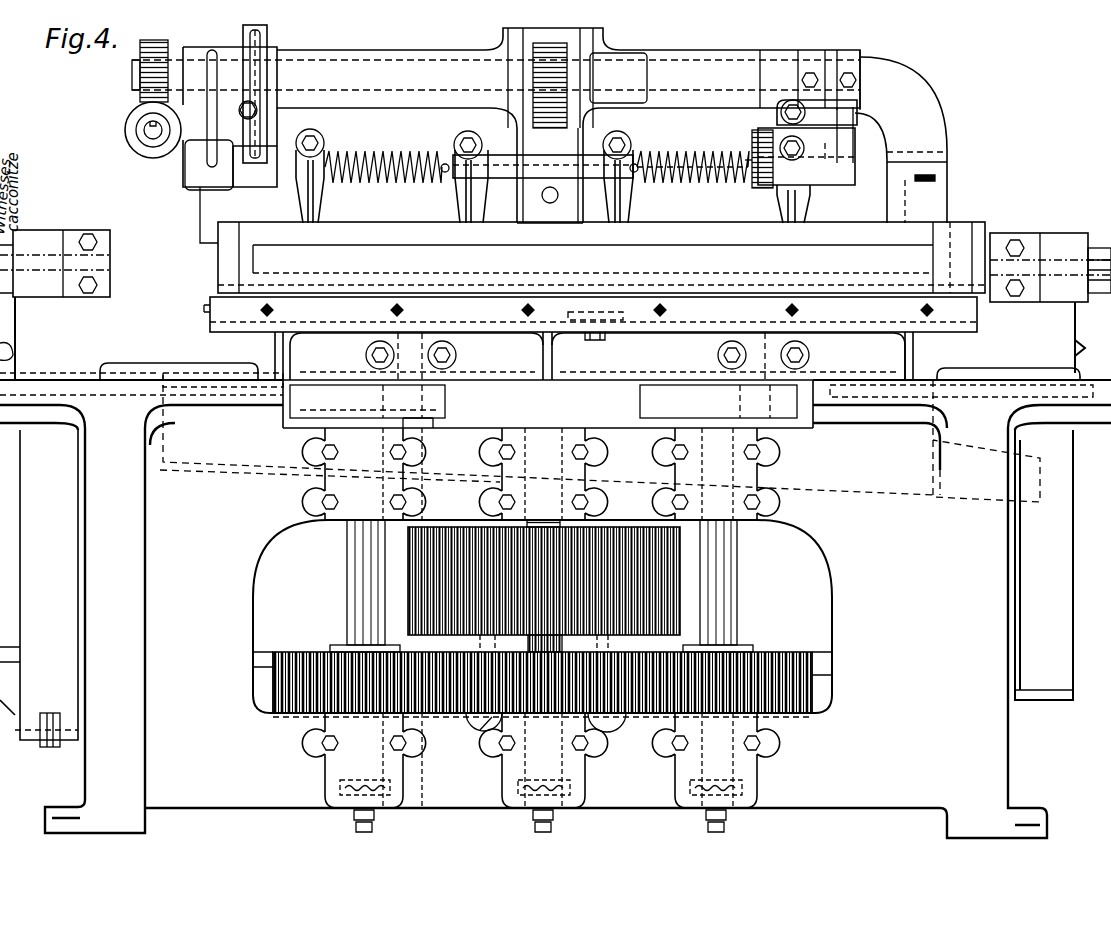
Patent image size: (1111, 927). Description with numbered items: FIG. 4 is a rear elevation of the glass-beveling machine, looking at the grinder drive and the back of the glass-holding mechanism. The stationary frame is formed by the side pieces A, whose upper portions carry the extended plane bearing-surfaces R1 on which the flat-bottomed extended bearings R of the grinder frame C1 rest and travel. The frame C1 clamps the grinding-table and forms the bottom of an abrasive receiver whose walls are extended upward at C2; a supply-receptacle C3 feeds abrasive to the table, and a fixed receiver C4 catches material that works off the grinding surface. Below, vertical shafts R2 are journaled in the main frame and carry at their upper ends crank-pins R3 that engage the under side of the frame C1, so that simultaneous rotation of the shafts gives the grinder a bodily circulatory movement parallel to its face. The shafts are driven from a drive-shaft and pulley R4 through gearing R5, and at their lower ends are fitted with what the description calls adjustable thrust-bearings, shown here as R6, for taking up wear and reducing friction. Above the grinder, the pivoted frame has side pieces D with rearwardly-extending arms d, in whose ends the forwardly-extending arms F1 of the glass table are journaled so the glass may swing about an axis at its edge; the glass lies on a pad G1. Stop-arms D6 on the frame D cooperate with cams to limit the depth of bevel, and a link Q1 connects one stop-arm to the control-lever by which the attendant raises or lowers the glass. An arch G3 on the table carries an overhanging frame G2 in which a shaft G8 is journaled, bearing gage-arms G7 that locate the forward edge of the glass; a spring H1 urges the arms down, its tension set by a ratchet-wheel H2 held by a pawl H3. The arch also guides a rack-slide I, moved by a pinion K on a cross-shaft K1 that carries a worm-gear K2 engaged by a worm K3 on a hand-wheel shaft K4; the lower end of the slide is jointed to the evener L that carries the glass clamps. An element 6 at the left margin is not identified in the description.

The side pieces A is at (133, 683).
The left arm 6 is at (39, 585).
The link Q1 is at (47, 745).
The side pieces D is at (1078, 609).
The stop-arms D6 is at (1052, 686).
The plane bearing-surfaces R1 is at (55, 352).
The extended bearings R is at (131, 368).
The crank-pins R3 is at (428, 393).
The fixed receiver C4 is at (1045, 468).
The frame C1 is at (590, 338).
The upwardly-extended walls C2 is at (222, 258).
The rearwardly-extending arms d is at (37, 232).
The forwardly-extending arms F1 is at (72, 232).
The cross-shaft K1 is at (568, 125).
The pinion K is at (540, 72).
The clamp-support or slide I is at (548, 118).
The worm-gear K2 is at (132, 65).
The worm K3 is at (132, 130).
The shaft K4 is at (150, 136).
The overhanging frame G2 is at (200, 122).
The arch G3 is at (733, 79).
The pawl H3 is at (770, 128).
The ratchet-wheel H2 is at (762, 186).
The spring H1 is at (680, 157).
The shaft G8 is at (600, 165).
The gage-arms G7 is at (460, 198).
The supply-receptacle C3 is at (383, 184).
The pad G1 is at (583, 171).
The evener L is at (527, 205).
The vertical shafts R2 is at (347, 578).
The drive-shaft and pulley R4 is at (544, 586).
The gearing R5 is at (430, 715).
The bearing cap R6 is at (372, 818).